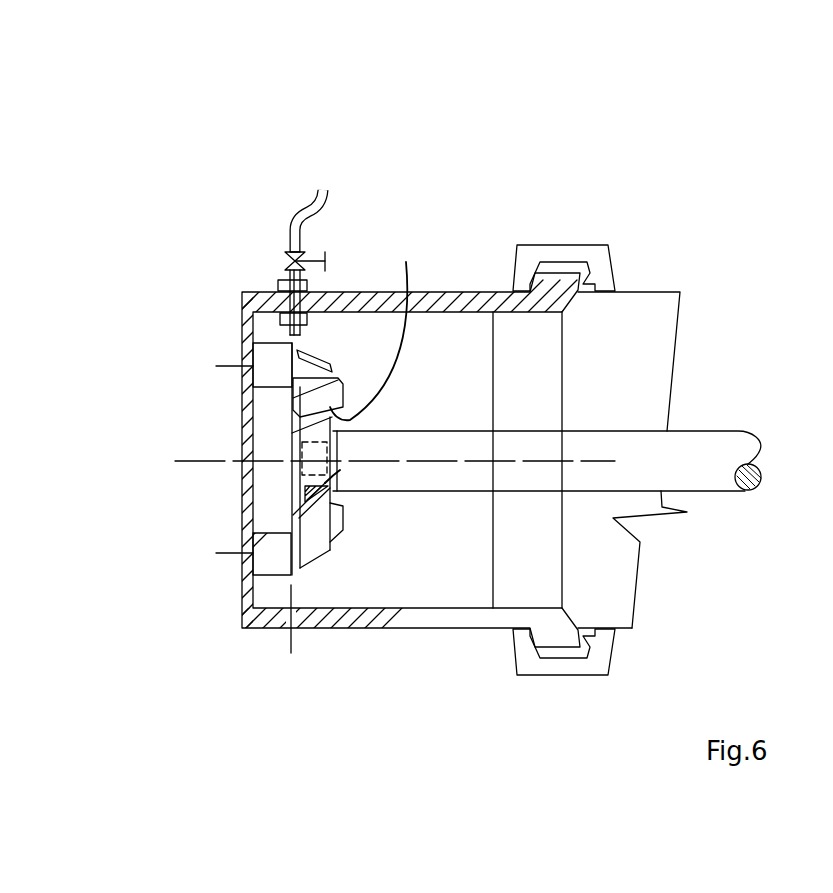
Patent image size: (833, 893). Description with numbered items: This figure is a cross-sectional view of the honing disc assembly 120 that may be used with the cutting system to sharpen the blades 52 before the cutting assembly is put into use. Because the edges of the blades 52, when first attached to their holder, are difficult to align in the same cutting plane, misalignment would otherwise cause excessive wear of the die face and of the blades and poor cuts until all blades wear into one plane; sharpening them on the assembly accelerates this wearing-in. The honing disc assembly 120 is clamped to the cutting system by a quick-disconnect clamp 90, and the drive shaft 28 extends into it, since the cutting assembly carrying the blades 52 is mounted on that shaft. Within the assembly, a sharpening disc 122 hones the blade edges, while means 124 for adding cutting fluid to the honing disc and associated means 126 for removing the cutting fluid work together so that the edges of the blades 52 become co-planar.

The drive shaft 28 is at (700, 432).
The blades 52 is at (302, 357).
The quick-disconnect clamp 90 is at (565, 245).
The honing disc assembly 120 is at (440, 630).
The sharpening disc 122 is at (262, 343).
The means for adding cutting fluid 124 is at (294, 212).
The means for removing the cutting fluid 126 is at (292, 655).